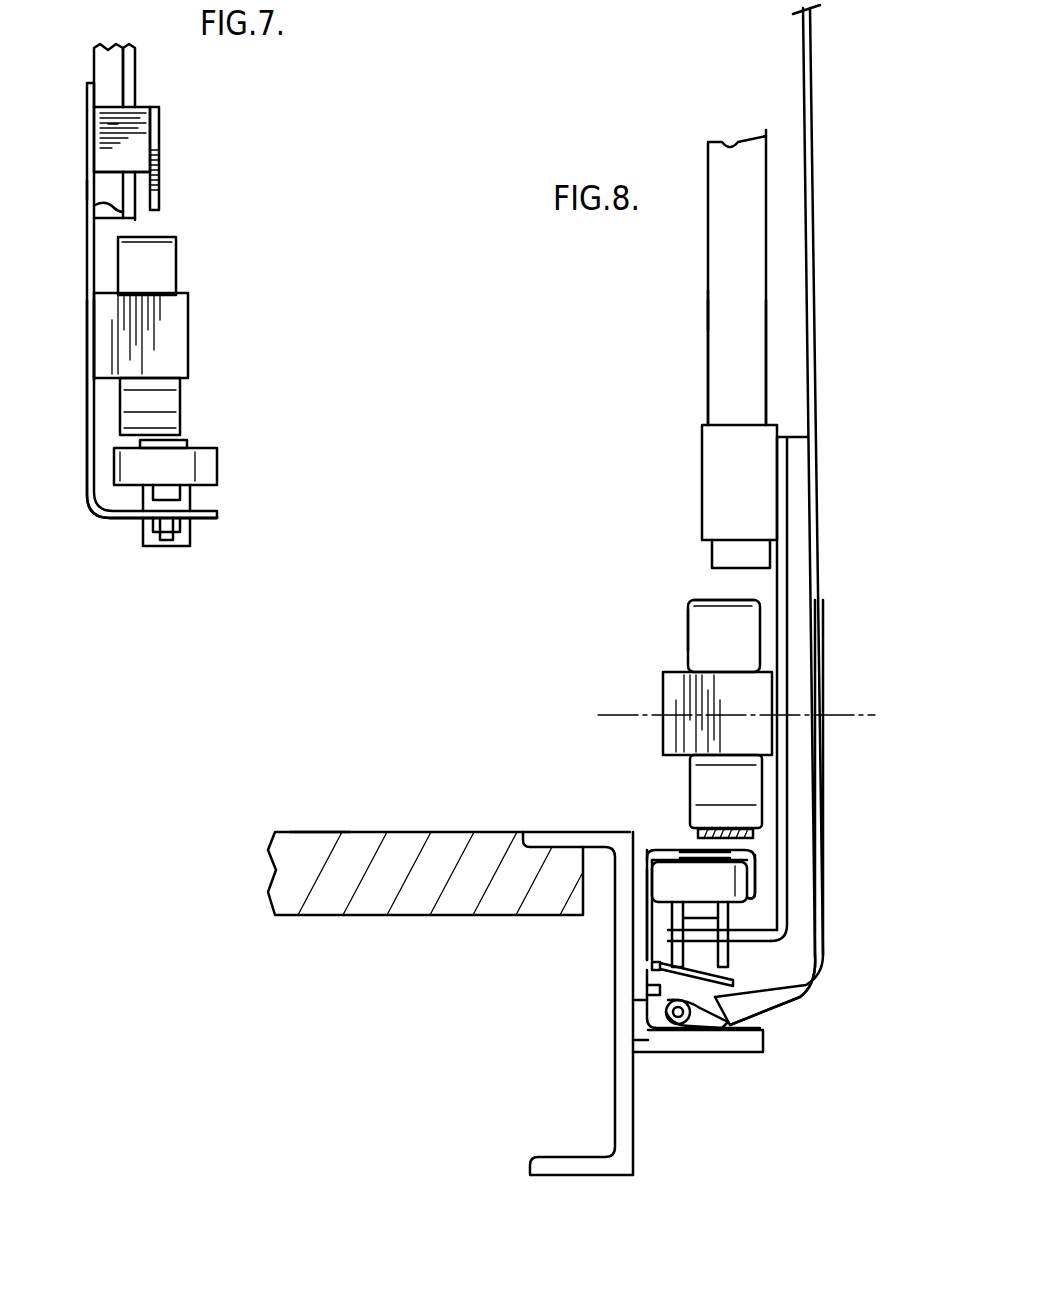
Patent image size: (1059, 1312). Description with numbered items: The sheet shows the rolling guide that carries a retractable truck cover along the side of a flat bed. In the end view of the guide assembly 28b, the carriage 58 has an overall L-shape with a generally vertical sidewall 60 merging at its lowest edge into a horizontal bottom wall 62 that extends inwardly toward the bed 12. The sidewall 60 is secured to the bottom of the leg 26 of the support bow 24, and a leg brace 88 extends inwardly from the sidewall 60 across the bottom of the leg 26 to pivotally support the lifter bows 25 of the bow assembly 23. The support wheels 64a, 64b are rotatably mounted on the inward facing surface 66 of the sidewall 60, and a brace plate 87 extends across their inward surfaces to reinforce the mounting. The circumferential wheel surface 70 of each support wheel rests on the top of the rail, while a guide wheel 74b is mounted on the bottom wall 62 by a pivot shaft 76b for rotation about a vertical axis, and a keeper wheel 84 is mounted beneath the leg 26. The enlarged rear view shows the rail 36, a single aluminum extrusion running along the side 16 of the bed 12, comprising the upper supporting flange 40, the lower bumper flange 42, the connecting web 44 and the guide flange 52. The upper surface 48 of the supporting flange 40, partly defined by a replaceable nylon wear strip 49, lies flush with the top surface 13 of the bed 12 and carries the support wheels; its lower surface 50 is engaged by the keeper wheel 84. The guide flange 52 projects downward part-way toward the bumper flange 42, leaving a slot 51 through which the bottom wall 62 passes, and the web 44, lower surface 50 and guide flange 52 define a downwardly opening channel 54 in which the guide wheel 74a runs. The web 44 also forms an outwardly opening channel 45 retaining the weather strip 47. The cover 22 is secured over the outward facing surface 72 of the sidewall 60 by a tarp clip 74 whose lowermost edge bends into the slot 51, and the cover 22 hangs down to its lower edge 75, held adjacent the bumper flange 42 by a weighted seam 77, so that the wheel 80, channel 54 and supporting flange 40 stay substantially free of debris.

In FIG. 8, the bed 12 is at (384, 818).
In FIG. 8, the top surface 13 is at (320, 832).
In FIG. 8, the side 16 is at (630, 1132).
In FIG. 8, the retractable flexible cover 22 is at (812, 356).
In FIG. 8, the bow assembly 23 is at (688, 316).
In FIG. 7, the support bow 24 is at (72, 195).
In FIG. 7, the lifter bow 25 is at (100, 62).
In FIG. 8, the lifter bow 25 is at (710, 172).
In FIG. 7, the leg 26 is at (137, 62).
In FIG. 8, the leg 26 is at (752, 355).
In FIG. 7, the guide assembly 28b is at (78, 340).
In FIG. 8, the guide assembly 28b is at (666, 634).
In FIG. 8, the rail 36 is at (656, 1052).
In FIG. 8, the upper supporting flange 40 is at (645, 840).
In FIG. 8, the lower bumper flange 42 is at (752, 1052).
In FIG. 8, the connecting web 44 is at (632, 1010).
In FIG. 8, the outwardly opening channel 45 is at (652, 965).
In FIG. 8, the weather strip 47 is at (645, 1003).
In FIG. 8, the upper surface 48 is at (650, 840).
In FIG. 8, the wear strip 49 is at (735, 828).
In FIG. 8, the lower surface 50 is at (650, 880).
In FIG. 8, the slot 51 is at (790, 1022).
In FIG. 8, the guide flange 52 is at (765, 875).
In FIG. 8, the channel 54 is at (668, 840).
In FIG. 7, the carriage 58 is at (76, 273).
In FIG. 7, the sidewall 60 is at (92, 390).
In FIG. 8, the sidewall 60 is at (775, 585).
In FIG. 7, the bottom wall 62 is at (117, 515).
In FIG. 8, the support wheel 64a is at (700, 650).
In FIG. 7, the support wheel 64b is at (165, 238).
In FIG. 7, the inward facing surface 66 is at (130, 220).
In FIG. 7, the circumferential wheel surface 70 is at (172, 423).
In FIG. 8, the circumferential wheel surface 70 is at (700, 598).
In FIG. 7, the outward facing surface 72 is at (94, 135).
In FIG. 8, the tarp clip 74 is at (810, 614).
In FIG. 8, the guide wheel 74a is at (720, 898).
In FIG. 7, the guide wheel 74b is at (218, 460).
In FIG. 8, the lower edge 75 is at (662, 1010).
In FIG. 7, the pivot shaft 76b is at (178, 523).
In FIG. 8, the weighted seam 77 is at (682, 1026).
In FIG. 8, the wheel 80 is at (752, 493).
In FIG. 7, the keeper wheel 84 is at (178, 540).
In FIG. 8, the keeper wheel 84 is at (737, 918).
In FIG. 7, the brace plate 87 is at (172, 312).
In FIG. 8, the brace plate 87 is at (672, 693).
In FIG. 7, the leg brace 88 is at (160, 135).